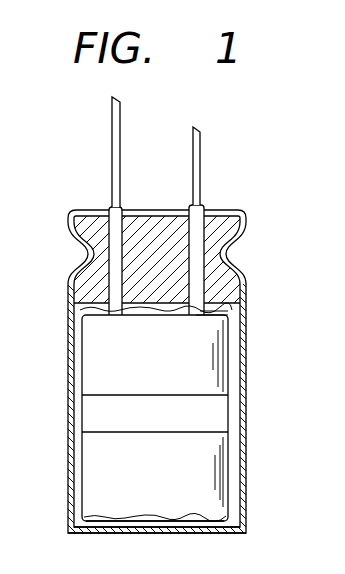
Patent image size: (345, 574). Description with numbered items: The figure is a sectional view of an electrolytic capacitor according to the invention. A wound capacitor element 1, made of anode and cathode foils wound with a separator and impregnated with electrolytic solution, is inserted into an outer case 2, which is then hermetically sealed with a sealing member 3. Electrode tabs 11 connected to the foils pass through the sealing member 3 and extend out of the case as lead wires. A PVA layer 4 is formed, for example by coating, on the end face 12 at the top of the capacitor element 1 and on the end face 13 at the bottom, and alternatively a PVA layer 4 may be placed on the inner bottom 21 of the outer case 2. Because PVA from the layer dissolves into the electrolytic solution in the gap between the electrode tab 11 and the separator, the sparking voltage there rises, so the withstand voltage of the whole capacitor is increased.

The capacitor element 1 is at (98, 368).
The outer case 2 is at (238, 393).
The sealing member 3 is at (230, 230).
The PVA layer 4 is at (85, 312).
The electrode tab 11 is at (193, 258).
The end face 12 is at (222, 312).
The end face 13 is at (100, 513).
The inner bottom 21 is at (235, 523).